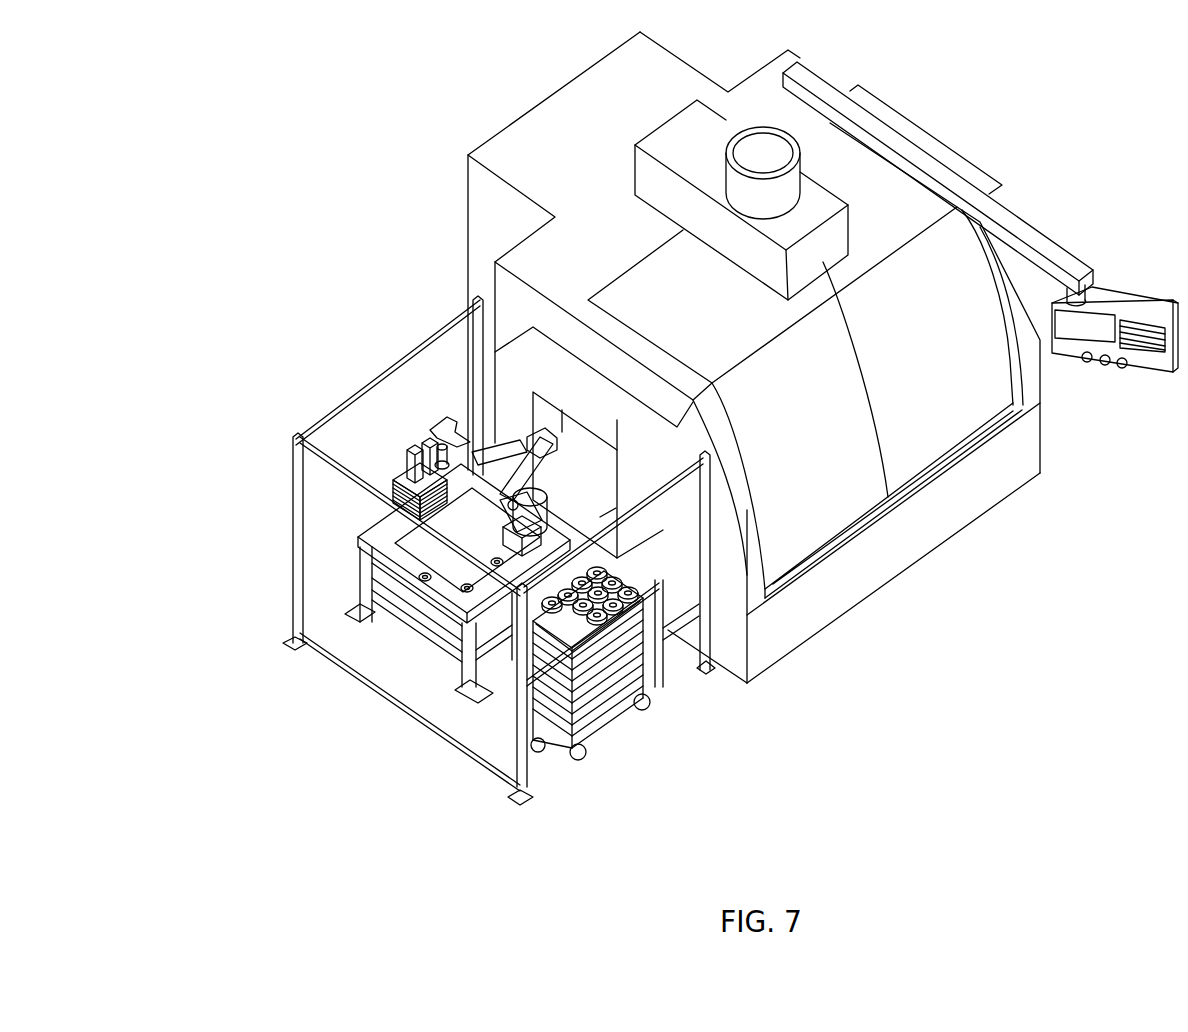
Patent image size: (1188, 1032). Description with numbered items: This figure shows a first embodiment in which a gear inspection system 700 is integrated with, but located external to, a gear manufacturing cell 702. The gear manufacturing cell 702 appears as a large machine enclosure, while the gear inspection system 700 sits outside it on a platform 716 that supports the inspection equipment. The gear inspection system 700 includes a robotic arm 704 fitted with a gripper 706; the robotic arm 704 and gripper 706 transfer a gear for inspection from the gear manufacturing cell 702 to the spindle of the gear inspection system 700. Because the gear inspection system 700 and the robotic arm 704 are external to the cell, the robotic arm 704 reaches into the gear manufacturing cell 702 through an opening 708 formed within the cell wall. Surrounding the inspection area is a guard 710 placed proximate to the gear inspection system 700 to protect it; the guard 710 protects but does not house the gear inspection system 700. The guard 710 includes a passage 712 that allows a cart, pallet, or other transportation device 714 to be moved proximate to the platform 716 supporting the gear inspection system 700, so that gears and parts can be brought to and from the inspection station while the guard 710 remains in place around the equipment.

The gear inspection system 700 is at (403, 418).
The gear manufacturing cell 702 is at (668, 68).
The robotic arm 704 is at (468, 430).
The gripper 706 is at (426, 398).
The opening 708 is at (617, 473).
The guard 710 is at (262, 529).
The passage 712 is at (609, 758).
The transportation device 714 is at (565, 626).
The platform 716 is at (376, 535).